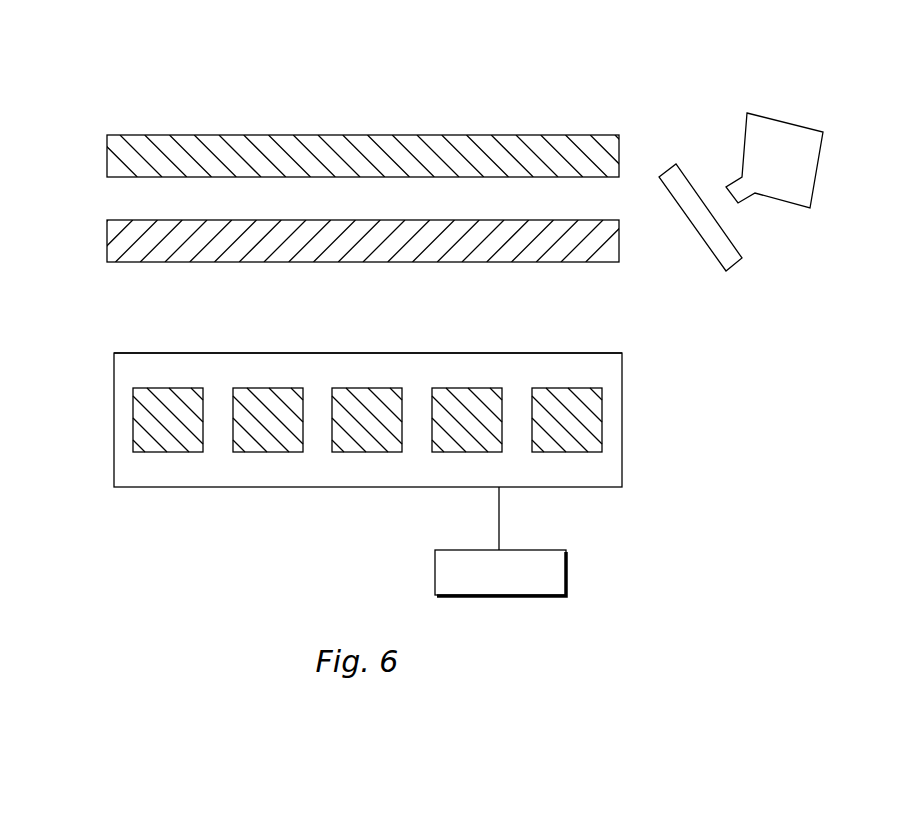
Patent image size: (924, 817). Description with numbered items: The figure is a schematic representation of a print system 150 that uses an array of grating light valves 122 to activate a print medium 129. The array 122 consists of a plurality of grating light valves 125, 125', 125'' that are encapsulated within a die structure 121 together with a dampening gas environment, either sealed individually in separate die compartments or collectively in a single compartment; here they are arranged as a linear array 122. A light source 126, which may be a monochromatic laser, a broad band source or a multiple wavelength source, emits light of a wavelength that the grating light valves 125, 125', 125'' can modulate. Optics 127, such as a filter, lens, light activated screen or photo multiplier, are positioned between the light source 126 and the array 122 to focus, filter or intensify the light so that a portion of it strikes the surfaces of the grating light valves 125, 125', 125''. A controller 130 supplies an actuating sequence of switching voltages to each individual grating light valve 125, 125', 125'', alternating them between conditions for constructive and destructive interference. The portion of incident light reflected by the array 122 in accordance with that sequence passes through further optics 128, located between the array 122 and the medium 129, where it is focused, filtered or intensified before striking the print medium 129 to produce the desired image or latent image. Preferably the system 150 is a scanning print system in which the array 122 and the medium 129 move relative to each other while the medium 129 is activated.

The system 150 is at (116, 91).
The print medium 129 is at (322, 135).
The optics 128 is at (108, 248).
The optics 127 is at (688, 175).
The light source 126 is at (778, 203).
The die structure 121 is at (597, 470).
The array of grating light valves 122 is at (145, 353).
The grating light valve 125 is at (168, 471).
The grating light valve 125' is at (268, 471).
The grating light valve 125'' is at (369, 471).
The controller 130 is at (570, 567).